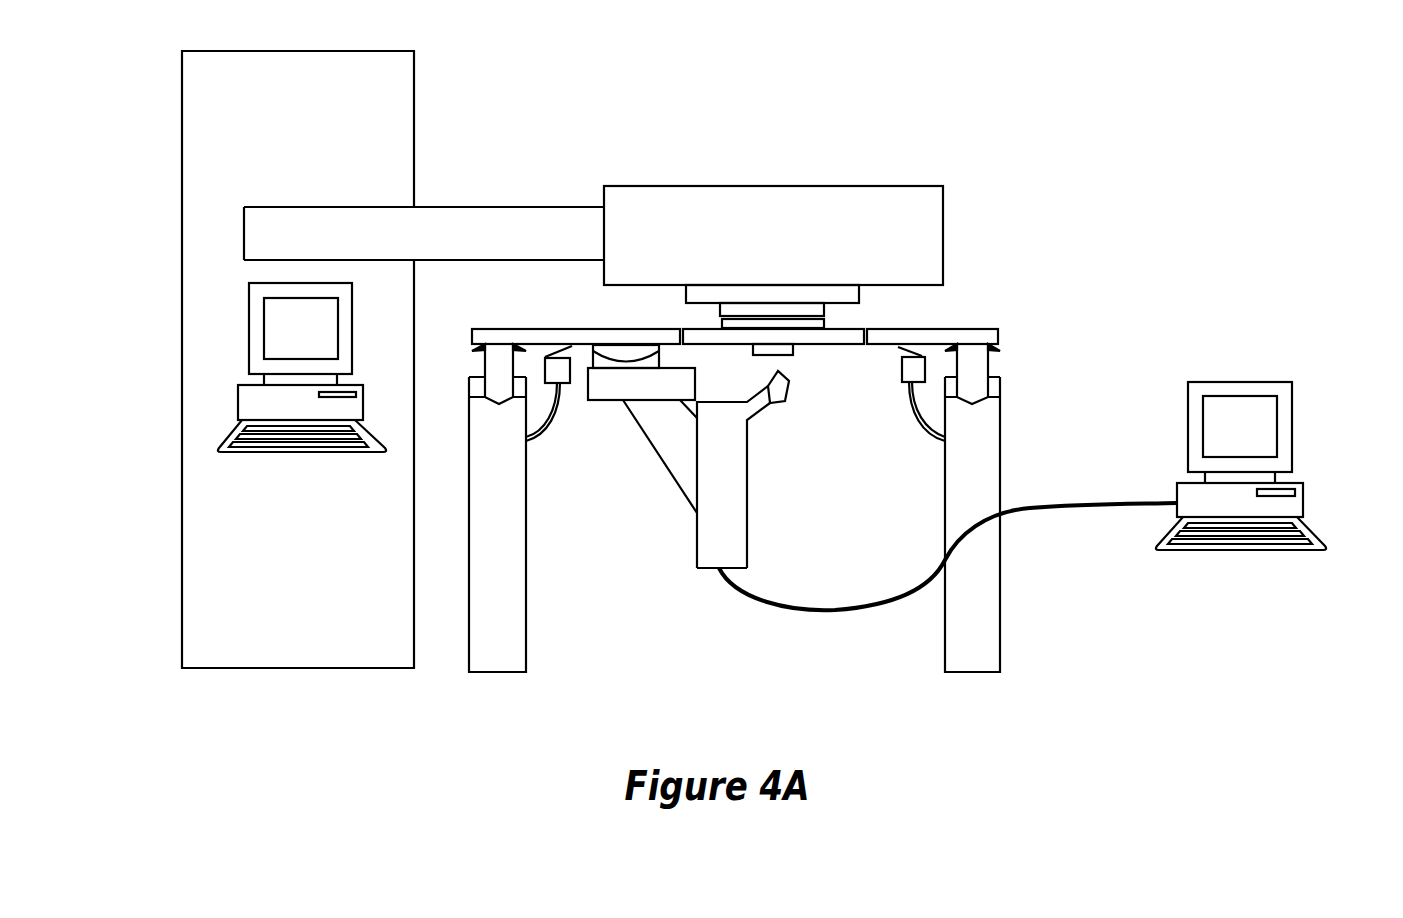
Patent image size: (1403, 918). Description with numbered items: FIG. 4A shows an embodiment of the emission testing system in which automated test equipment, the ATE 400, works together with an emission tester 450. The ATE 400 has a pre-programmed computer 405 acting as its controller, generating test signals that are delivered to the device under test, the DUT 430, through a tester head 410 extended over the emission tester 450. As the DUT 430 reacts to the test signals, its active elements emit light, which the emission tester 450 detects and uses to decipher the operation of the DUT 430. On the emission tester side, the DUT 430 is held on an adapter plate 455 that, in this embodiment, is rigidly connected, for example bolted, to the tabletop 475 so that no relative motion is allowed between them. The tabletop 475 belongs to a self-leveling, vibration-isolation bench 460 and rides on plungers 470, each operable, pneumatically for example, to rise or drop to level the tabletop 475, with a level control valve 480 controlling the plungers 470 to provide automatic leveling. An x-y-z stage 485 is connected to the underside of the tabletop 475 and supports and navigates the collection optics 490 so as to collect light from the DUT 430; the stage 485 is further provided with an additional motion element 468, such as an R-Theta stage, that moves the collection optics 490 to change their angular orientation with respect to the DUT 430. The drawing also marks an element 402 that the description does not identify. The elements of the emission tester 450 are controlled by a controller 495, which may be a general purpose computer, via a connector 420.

The automated test equipment (ATE) 400 is at (273, 135).
The pre-programmed computer 405 is at (277, 344).
The tester head 410 is at (740, 251).
The emission tester 450 is at (1047, 258).
The tabletop 475 is at (552, 330).
The adapter plate 455 is at (847, 328).
The self-leveling vibration-isolation bench 460 is at (1030, 312).
The substrate holder 402 is at (867, 363).
The plunger 470 is at (982, 368).
The level control valve 480 is at (563, 380).
The motion element 468 is at (633, 353).
The x-y-z stage 485 is at (642, 440).
The device under test (DUT) 430 is at (792, 357).
The collection optics 490 is at (780, 408).
The connector 420 is at (1025, 517).
The controller 495 is at (1241, 466).